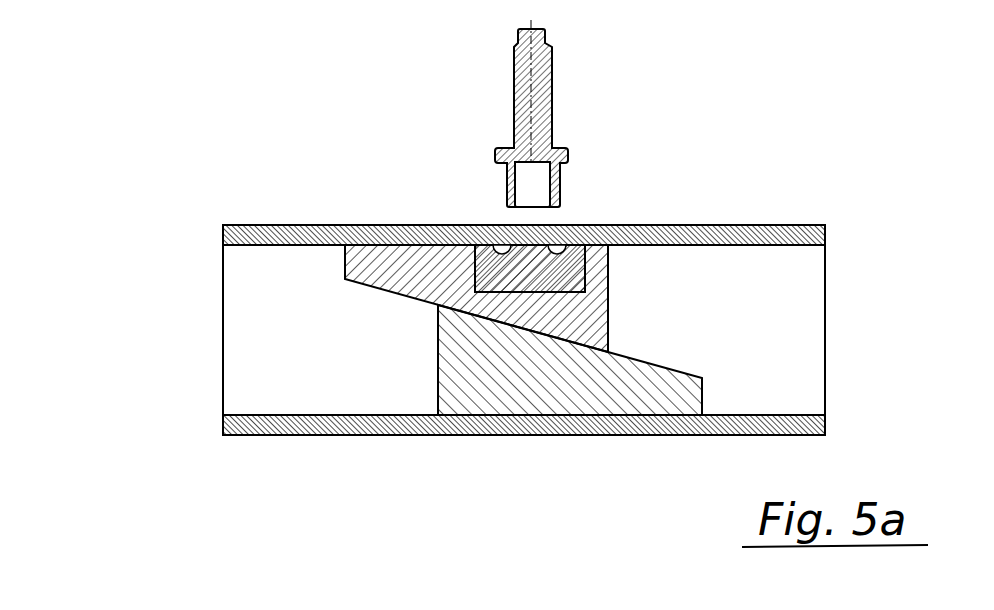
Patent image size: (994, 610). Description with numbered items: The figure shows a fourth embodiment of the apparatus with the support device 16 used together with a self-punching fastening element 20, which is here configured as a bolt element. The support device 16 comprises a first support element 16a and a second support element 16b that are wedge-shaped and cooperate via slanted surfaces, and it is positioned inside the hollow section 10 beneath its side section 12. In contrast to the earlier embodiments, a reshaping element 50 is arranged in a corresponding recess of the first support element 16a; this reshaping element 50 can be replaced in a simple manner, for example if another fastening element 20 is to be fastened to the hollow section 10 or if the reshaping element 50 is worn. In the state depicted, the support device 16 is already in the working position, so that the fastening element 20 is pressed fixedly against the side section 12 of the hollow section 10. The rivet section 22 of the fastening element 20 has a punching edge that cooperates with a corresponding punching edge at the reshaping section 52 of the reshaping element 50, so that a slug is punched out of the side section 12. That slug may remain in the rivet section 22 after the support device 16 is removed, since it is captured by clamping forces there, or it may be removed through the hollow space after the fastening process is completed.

The hollow section 10 is at (793, 195).
The side section 12 is at (303, 225).
The support device 16 is at (472, 328).
The first support element 16a is at (345, 265).
The second support element 16b is at (438, 378).
The fastening element 20 is at (596, 110).
The rivet section 22 is at (558, 182).
The reshaping element 50 is at (587, 268).
The reshaping section 52 is at (522, 250).